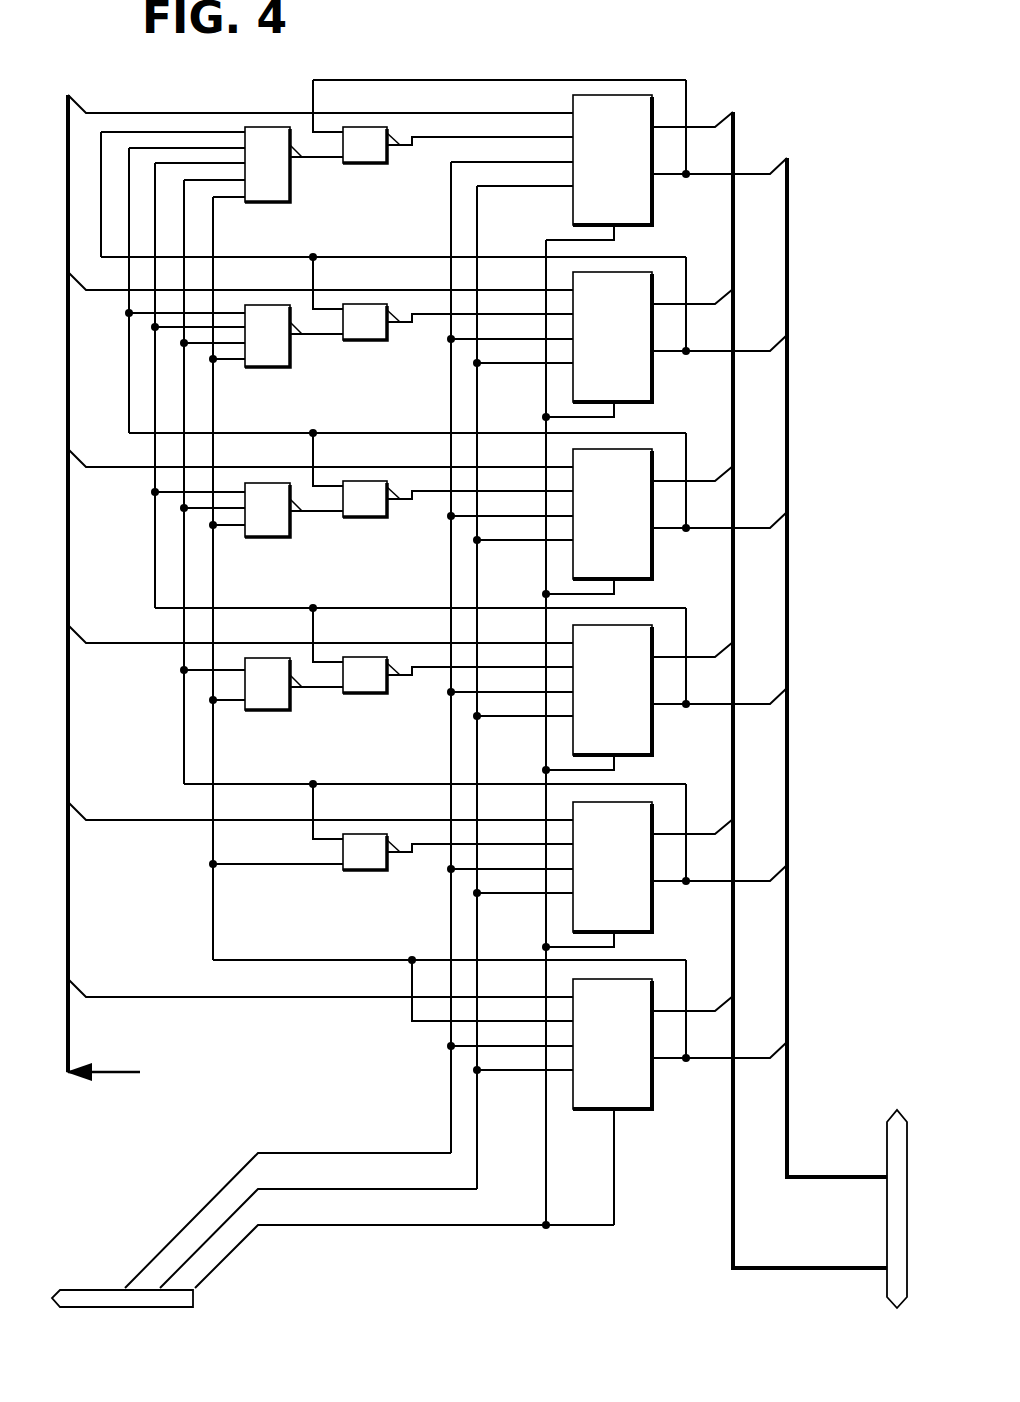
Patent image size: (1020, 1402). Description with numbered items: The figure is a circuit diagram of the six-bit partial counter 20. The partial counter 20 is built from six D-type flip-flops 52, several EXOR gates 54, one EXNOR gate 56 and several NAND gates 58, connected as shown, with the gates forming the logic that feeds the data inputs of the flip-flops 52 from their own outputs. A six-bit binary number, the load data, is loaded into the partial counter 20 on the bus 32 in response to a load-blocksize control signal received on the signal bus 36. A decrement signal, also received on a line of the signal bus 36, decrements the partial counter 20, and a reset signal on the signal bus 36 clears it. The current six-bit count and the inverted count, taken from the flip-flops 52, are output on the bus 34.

The partial counter 20 is at (798, 32).
The bus 32 is at (181, 610).
The bus 34 is at (887, 1133).
The signal bus 36 is at (93, 1288).
The D-type flip-flop 52 is at (652, 207).
The EXOR gate 54 is at (372, 163).
The EXNOR gate 56 is at (372, 870).
The NAND gate 58 is at (275, 202).